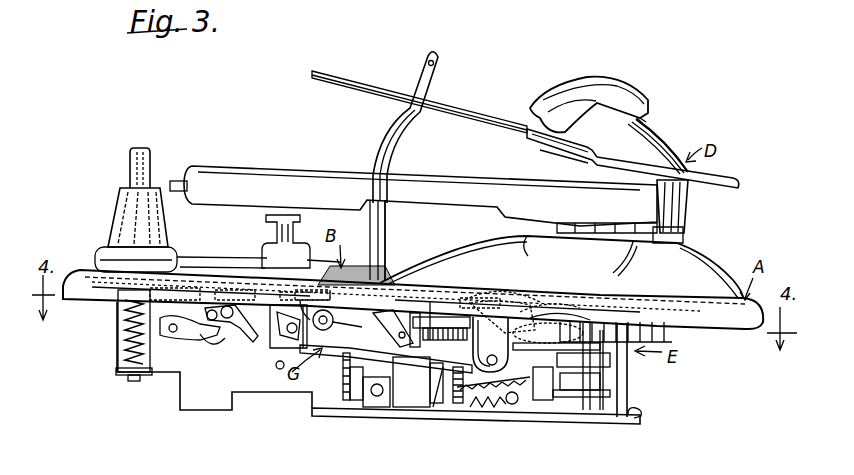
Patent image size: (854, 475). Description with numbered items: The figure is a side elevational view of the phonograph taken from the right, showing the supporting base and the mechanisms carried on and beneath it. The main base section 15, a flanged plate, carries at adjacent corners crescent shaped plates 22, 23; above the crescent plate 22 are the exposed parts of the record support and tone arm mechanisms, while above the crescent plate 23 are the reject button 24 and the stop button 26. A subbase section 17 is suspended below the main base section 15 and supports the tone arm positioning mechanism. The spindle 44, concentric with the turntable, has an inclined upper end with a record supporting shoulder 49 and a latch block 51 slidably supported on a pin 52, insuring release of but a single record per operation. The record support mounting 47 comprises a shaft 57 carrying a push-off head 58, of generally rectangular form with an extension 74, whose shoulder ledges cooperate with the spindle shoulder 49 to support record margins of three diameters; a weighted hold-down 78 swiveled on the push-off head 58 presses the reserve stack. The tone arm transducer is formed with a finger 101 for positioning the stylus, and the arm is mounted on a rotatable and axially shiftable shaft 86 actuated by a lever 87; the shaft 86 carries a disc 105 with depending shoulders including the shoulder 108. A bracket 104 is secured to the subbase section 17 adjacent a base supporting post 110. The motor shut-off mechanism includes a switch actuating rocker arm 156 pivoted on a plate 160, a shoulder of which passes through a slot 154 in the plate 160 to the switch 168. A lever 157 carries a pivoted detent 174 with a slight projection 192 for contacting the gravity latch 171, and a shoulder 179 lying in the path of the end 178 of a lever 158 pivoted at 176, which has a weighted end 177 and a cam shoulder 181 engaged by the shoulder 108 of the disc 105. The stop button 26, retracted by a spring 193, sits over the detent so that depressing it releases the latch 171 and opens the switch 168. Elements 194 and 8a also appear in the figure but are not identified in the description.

The main base section 15 is at (712, 325).
The crescent shaped plate 22 is at (707, 263).
The reject button 24 is at (130, 165).
The key body 194 is at (107, 226).
The crescent shaped plate 23 is at (100, 251).
The arm 8a is at (470, 184).
The finger 101 is at (190, 176).
The record supporting shoulder 49 is at (407, 110).
The latch block 51 is at (433, 93).
The spindle 44 is at (387, 149).
The pin 52 is at (437, 62).
The stop button 26 is at (273, 227).
The weighted hold-down 78 is at (573, 87).
The push-off head 58 is at (644, 137).
The mounting 47 is at (683, 222).
The shaft 57 is at (672, 234).
The extension 74 is at (548, 143).
The plate 160 is at (208, 408).
The slot 154 is at (152, 375).
The switch actuating rocker arm 156 is at (160, 344).
The gravity latch 171 is at (200, 346).
The detent 174 is at (272, 348).
The shoulder 179 is at (317, 303).
The end 178 is at (360, 360).
The projection 192 is at (398, 407).
The lever 157 is at (396, 318).
The spring 193 is at (440, 318).
The lever 158 is at (457, 405).
The pivot 176 is at (502, 331).
The switch 168 is at (483, 330).
The shoulder 108 is at (548, 350).
The lever 87 is at (500, 400).
The cam shoulder 181 is at (540, 410).
The shaft 86 is at (578, 412).
The bracket 104 is at (592, 416).
The subbase section 17 is at (641, 424).
The disc 105 is at (626, 368).
The base supporting post 110 is at (622, 400).
The weighted end 177 is at (578, 321).